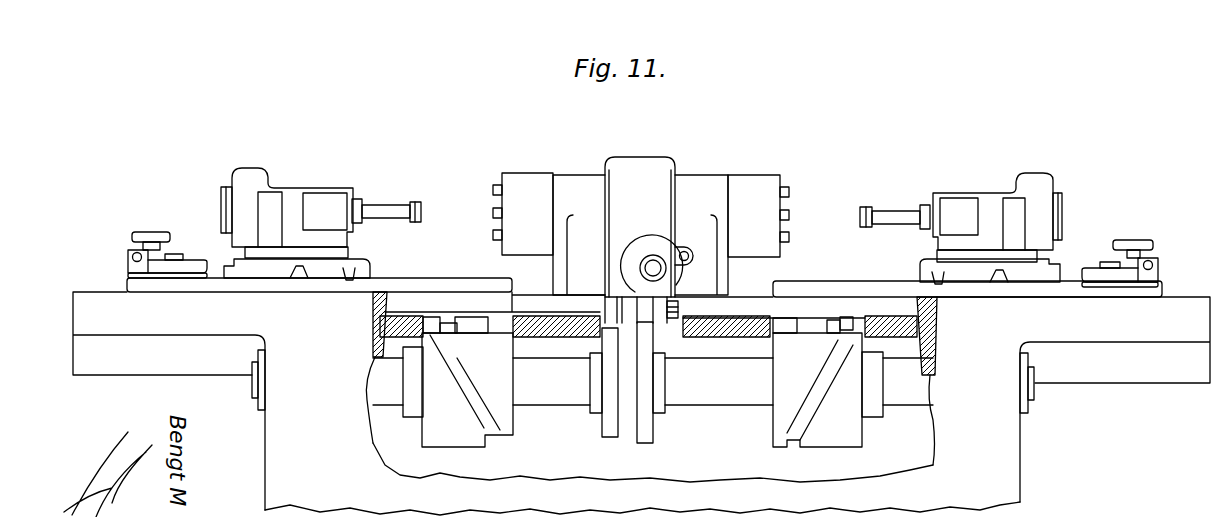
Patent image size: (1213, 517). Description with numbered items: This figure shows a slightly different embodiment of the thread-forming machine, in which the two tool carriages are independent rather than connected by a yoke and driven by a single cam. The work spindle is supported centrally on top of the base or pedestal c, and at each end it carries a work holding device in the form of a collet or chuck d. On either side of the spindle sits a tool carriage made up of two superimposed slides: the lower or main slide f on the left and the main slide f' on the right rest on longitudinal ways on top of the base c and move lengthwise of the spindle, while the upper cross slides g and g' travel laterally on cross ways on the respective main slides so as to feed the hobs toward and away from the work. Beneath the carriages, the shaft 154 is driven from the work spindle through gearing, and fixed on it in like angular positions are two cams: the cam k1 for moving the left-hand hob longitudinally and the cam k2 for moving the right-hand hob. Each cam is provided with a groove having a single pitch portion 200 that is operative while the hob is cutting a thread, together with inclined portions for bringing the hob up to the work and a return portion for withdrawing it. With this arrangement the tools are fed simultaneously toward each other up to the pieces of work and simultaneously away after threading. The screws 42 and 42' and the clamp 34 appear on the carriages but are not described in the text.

The base c is at (277, 443).
The main slide f is at (319, 264).
The main slide f' is at (967, 270).
The cross slide g is at (280, 224).
The cross slide g' is at (1000, 228).
The clamping screw 34 is at (156, 223).
The adjusting screw 42 is at (386, 196).
The adjusting screw 42' is at (895, 202).
The collet or chuck d is at (641, 215).
The shaft 154 is at (712, 393).
The cam k1 is at (450, 435).
The cam k2 is at (827, 438).
The single pitch portion 200 is at (445, 332).